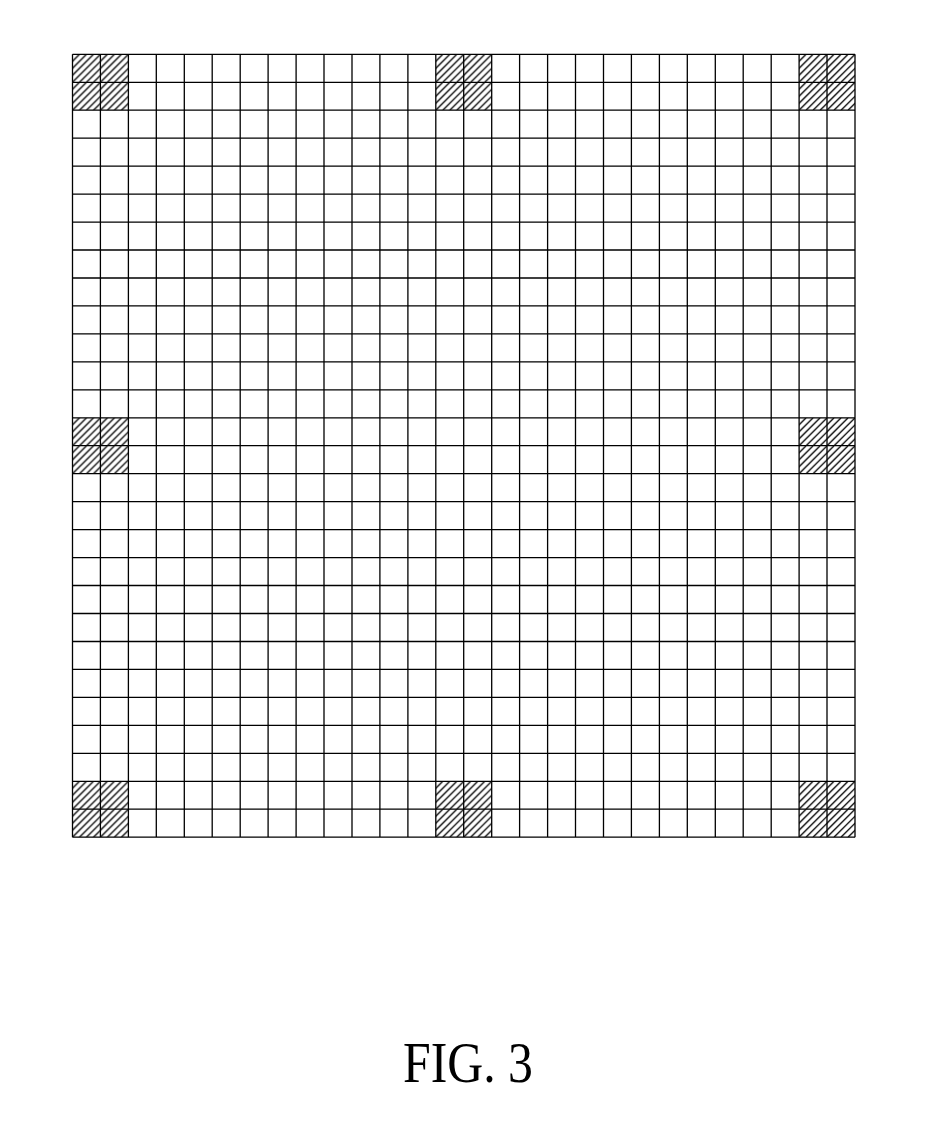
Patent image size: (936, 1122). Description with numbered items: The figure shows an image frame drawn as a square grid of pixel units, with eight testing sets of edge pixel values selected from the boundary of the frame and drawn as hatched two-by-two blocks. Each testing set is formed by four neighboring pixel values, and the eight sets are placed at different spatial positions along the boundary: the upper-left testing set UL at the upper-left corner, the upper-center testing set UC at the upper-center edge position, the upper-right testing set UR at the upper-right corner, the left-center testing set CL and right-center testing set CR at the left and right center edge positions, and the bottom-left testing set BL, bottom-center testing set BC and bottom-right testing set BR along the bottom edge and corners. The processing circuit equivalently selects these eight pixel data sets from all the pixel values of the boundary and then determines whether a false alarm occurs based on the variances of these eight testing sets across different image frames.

The upper-left testing set of edge pixel values UL is at (73, 82).
The upper-center testing set of edge pixel values UC is at (464, 61).
The upper-right testing set of edge pixel values UR is at (852, 82).
The left-center testing set of edge pixel values CL is at (73, 446).
The right-center testing set of edge pixel values CR is at (852, 446).
The bottom-left testing set of edge pixel values BL is at (74, 809).
The bottom-center testing set of edge pixel values BC is at (464, 831).
The bottom-right testing set of edge pixel values BR is at (852, 809).